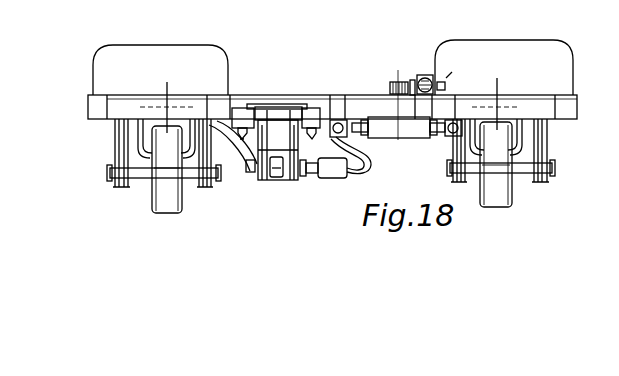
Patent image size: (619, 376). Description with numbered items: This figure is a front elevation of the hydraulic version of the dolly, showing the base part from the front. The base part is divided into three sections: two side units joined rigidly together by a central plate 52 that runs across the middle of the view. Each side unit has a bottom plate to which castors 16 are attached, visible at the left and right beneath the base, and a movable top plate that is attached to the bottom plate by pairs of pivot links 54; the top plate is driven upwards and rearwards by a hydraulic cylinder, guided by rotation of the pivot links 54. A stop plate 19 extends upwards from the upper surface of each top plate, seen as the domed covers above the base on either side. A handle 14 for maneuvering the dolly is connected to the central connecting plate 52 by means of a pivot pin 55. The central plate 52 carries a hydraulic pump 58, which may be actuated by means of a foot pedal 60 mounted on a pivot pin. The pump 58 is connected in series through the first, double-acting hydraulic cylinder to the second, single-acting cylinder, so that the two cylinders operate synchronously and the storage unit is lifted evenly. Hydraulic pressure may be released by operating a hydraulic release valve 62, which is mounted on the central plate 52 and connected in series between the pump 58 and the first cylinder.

The handle 14 is at (424, 70).
The castor 16 is at (150, 201).
The stop plate 19 is at (510, 40).
The central plate 52 is at (252, 95).
The pivot link 54 is at (113, 147).
The pivot pin 55 is at (449, 73).
The hydraulic pump 58 is at (290, 182).
The foot pedal 60 is at (291, 103).
The hydraulic release valve 62 is at (386, 85).